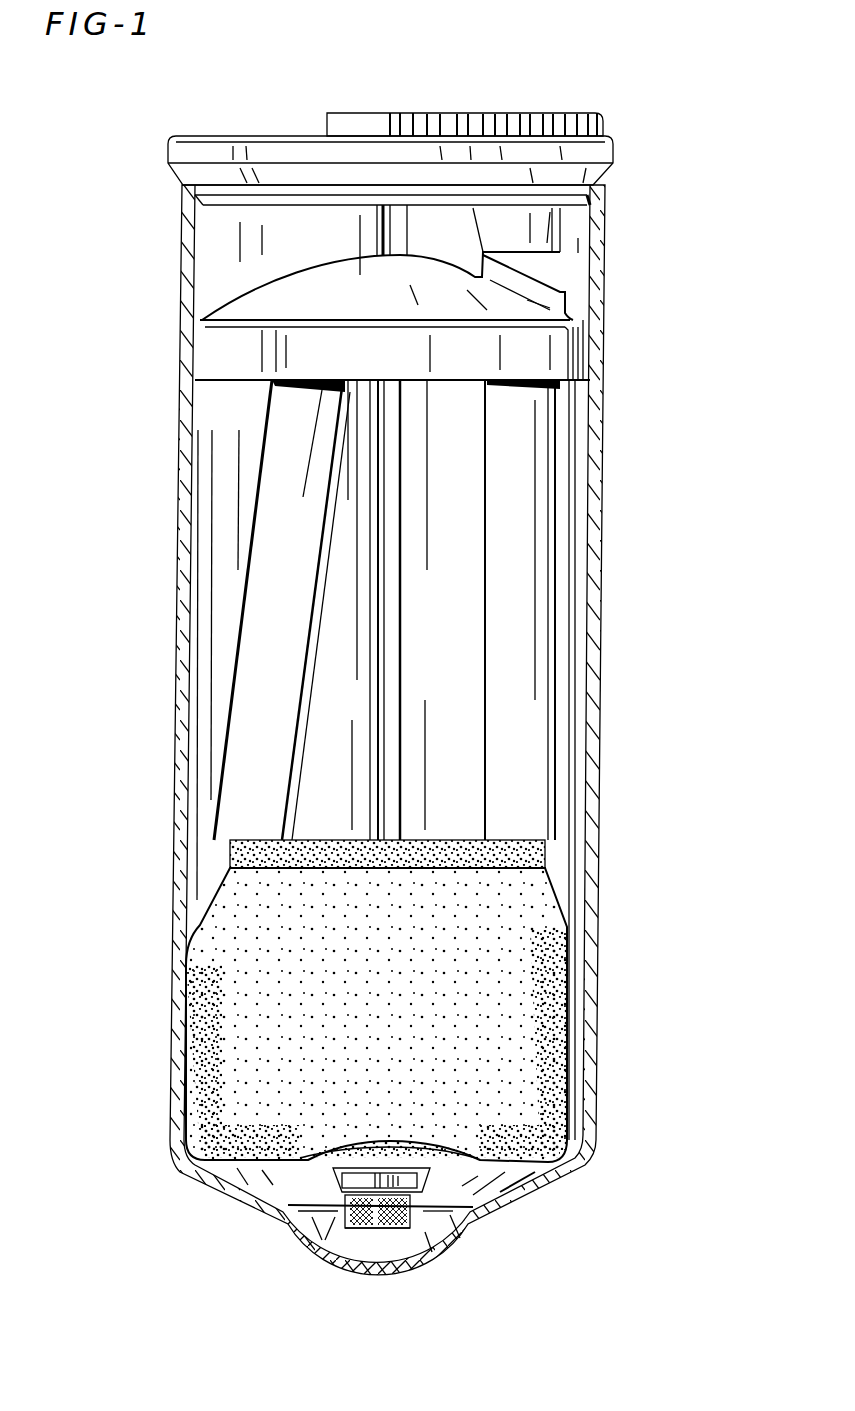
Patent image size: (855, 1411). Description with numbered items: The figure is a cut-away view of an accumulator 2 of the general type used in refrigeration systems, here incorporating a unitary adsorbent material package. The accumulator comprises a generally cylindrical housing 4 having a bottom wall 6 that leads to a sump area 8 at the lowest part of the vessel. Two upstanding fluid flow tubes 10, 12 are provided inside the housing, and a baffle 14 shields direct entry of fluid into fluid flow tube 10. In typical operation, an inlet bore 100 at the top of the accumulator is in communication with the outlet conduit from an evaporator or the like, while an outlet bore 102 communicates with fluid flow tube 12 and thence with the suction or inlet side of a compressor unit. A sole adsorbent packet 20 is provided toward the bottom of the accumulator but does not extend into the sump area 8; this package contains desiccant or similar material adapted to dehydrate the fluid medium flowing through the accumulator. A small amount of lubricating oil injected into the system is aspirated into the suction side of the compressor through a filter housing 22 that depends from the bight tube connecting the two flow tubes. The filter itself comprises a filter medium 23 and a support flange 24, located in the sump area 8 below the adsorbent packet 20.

The accumulator 2 is at (85, 695).
The housing 4 is at (597, 508).
The bottom wall 6 is at (562, 865).
The sump area 8 is at (360, 1245).
The fluid flow tube 10 is at (277, 463).
The fluid flow tube 12 is at (543, 600).
The baffle 14 is at (307, 284).
The adsorbent packet 20 is at (180, 1093).
The filter housing 22 is at (402, 1240).
The filter medium 23 is at (343, 1218).
The support flange 24 is at (445, 1215).
The inlet bore 100 is at (441, 114).
The outlet bore 102 is at (527, 101).